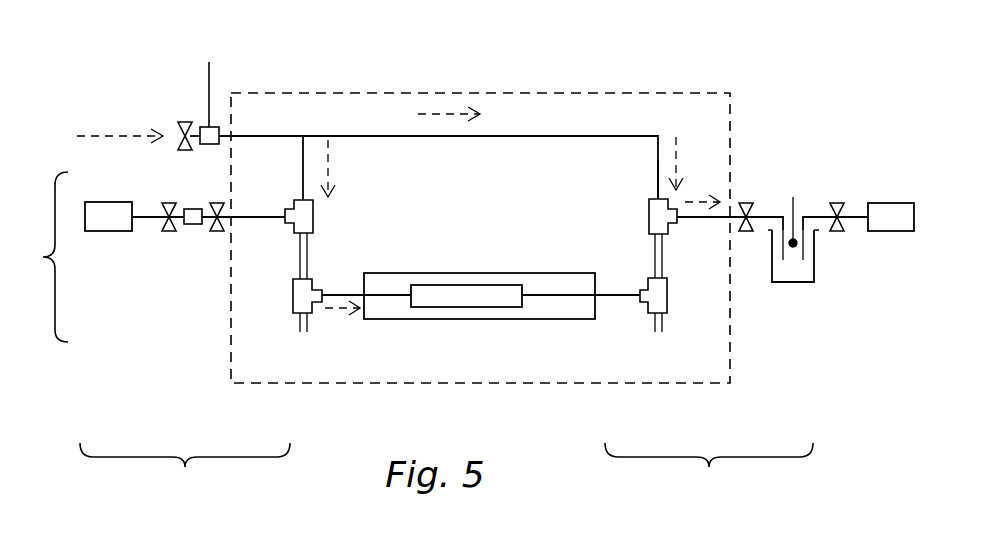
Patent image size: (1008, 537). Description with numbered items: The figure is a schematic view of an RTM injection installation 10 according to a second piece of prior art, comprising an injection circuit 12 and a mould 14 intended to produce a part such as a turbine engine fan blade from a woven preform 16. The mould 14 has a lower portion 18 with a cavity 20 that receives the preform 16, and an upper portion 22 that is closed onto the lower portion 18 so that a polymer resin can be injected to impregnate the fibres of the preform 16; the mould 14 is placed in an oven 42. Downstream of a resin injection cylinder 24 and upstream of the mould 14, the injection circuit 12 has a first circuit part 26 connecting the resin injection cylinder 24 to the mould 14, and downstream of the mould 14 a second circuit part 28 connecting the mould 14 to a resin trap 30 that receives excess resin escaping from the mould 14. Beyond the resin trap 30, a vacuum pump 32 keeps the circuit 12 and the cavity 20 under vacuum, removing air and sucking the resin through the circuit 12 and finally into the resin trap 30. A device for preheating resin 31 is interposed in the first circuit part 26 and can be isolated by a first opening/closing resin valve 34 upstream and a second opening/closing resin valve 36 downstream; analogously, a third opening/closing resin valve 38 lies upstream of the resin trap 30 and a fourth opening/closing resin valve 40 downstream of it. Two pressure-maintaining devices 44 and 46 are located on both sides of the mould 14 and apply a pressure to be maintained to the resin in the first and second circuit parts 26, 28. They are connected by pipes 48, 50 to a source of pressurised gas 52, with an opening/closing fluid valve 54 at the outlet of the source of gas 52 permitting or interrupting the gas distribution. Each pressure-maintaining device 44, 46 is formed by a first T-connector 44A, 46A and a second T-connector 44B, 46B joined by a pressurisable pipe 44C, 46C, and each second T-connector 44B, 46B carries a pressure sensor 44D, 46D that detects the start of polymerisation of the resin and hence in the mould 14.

The RTM injection installation 10 is at (585, 48).
The injection circuit 12 is at (37, 257).
The mould 14 is at (478, 310).
The woven preform 16 is at (457, 307).
The lower portion 18 is at (395, 308).
The cavity 20 is at (507, 307).
The upper portion 22 is at (397, 283).
The resin injection cylinder 24 is at (105, 231).
The first circuit part 26 is at (185, 472).
The second circuit part 28 is at (709, 472).
The resin trap 30 is at (800, 272).
The device for preheating resin 31 is at (193, 209).
The vacuum pump 32 is at (893, 231).
The first opening/closing resin valve 34 is at (167, 231).
The second opening/closing resin valve 36 is at (217, 231).
The third opening/closing resin valve 38 is at (746, 202).
The fourth opening/closing resin valve 40 is at (837, 202).
The oven 42 is at (297, 92).
The pressure-maintaining device 44 is at (286, 300).
The first T-connector 44A is at (313, 215).
The second T-connector 44B is at (293, 300).
The pipe 44C is at (307, 262).
The pressure sensor 44D is at (290, 325).
The pressure-maintaining device 46 is at (672, 300).
The first T-connector 46A is at (649, 215).
The second T-connector 46B is at (658, 298).
The pipe 46C is at (655, 262).
The pressure sensor 46D is at (667, 318).
The pipe 48 is at (303, 165).
The pipe 50 is at (658, 168).
The source of pressurised gas 52 is at (180, 124).
The opening/closing fluid valve 54 is at (183, 120).